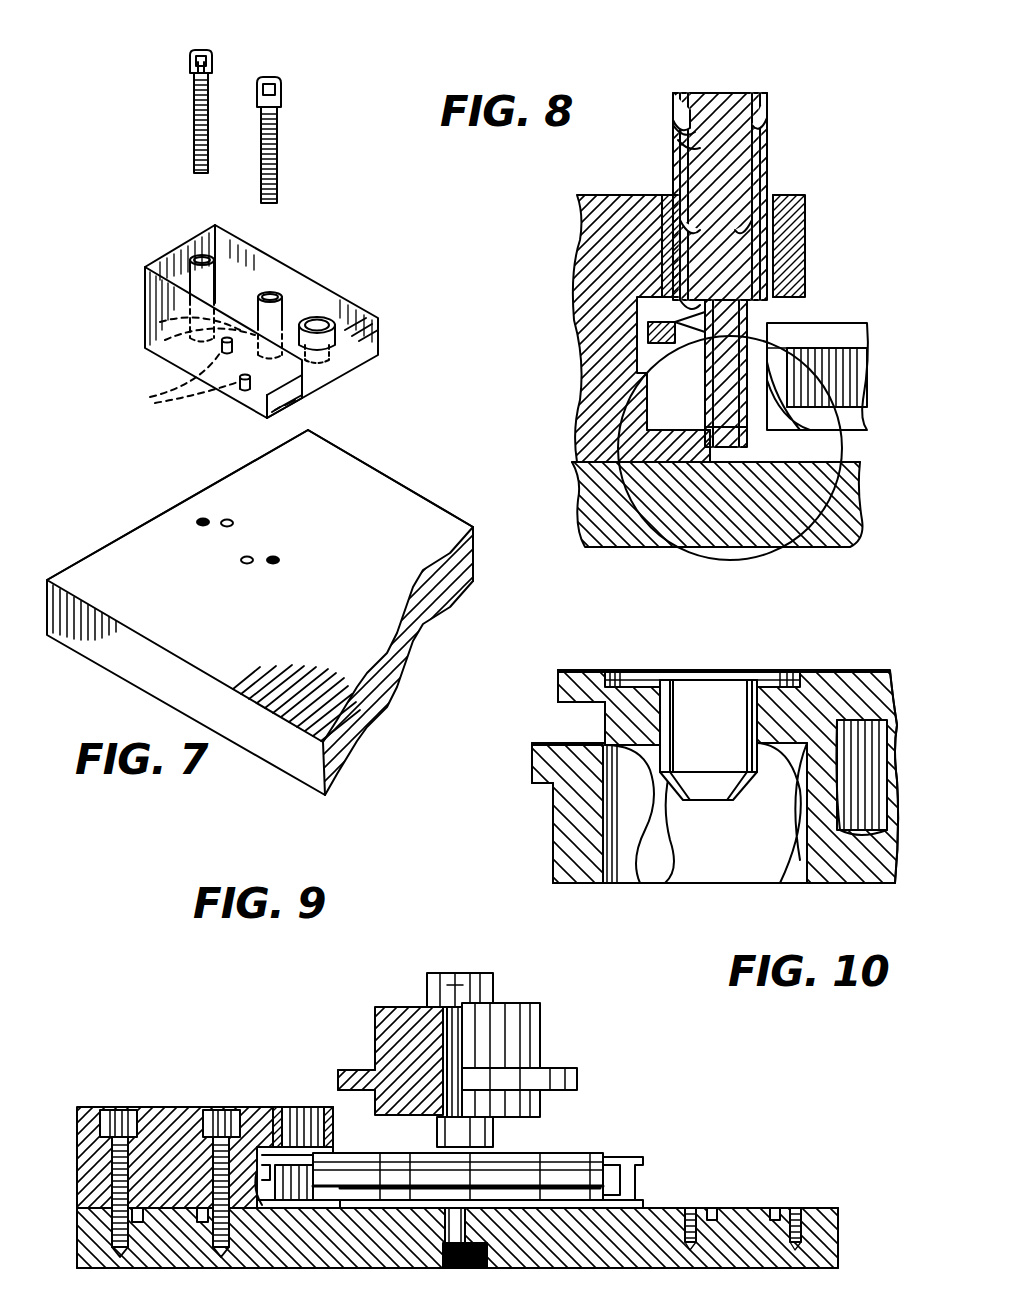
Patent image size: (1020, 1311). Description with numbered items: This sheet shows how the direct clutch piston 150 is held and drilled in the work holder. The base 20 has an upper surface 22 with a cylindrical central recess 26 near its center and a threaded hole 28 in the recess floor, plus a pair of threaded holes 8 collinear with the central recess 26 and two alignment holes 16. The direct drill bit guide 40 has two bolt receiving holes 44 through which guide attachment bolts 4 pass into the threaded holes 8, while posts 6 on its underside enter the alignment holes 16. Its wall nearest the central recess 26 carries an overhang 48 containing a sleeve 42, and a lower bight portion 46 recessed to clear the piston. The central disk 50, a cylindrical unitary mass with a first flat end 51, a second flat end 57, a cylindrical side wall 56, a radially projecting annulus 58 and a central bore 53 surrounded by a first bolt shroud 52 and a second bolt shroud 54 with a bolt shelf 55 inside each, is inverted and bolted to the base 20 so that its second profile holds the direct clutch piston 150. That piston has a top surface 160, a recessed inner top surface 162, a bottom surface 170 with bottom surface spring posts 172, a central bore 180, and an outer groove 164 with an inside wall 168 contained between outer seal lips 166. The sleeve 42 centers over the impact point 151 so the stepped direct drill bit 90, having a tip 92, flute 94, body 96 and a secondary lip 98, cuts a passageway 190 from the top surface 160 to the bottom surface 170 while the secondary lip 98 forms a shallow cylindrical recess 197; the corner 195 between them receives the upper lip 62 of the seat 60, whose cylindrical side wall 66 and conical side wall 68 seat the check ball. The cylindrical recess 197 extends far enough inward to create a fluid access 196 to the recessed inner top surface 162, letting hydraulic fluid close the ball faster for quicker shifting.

In FIG. 7, the drill bit guide attachment bolt 4 is at (213, 60).
In FIG. 9, the drill bit guide attachment bolt 4 is at (118, 1108).
In FIG. 7, the post 6 is at (188, 375).
In FIG. 9, the post 6 is at (140, 1216).
In FIG. 7, the threaded hole 8 is at (272, 565).
In FIG. 9, the threaded hole 8 is at (690, 1207).
In FIG. 7, the alignment hole 16 is at (247, 556).
In FIG. 9, the alignment hole 16 is at (776, 1207).
In FIG. 7, the base 20 is at (416, 470).
In FIG. 8, the base 20 is at (717, 504).
In FIG. 9, the base 20 is at (856, 1203).
In FIG. 7, the upper surface 22 is at (435, 532).
In FIG. 9, the upper surface 22 is at (657, 1207).
In FIG. 9, the central recess 26 is at (395, 1270).
In FIG. 9, the threaded hole 28 is at (460, 1270).
In FIG. 7, the direct drill bit guide 40 is at (118, 298).
In FIG. 8, the direct drill bit guide 40 is at (607, 190).
In FIG. 9, the direct drill bit guide 40 is at (176, 1106).
In FIG. 7, the sleeve 42 is at (328, 318).
In FIG. 8, the sleeve 42 is at (776, 193).
In FIG. 7, the bolt receiving hole 44 is at (160, 325).
In FIG. 7, the bight portion 46 is at (297, 405).
In FIG. 8, the bight portion 46 is at (625, 405).
In FIG. 7, the overhang 48 is at (380, 333).
In FIG. 8, the overhang 48 is at (800, 196).
In FIG. 9, the central disk 50 is at (300, 970).
In FIG. 9, the first flat end 51 is at (527, 1005).
In FIG. 9, the first bolt shroud 52 is at (455, 1003).
In FIG. 9, the central bore 53 is at (447, 1012).
In FIG. 9, the second bolt shroud 54 is at (437, 1132).
In FIG. 9, the bolt shelf 55 is at (456, 972).
In FIG. 9, the cylindrical side wall 56 is at (376, 1040).
In FIG. 9, the second flat end 57 is at (542, 1120).
In FIG. 9, the annulus 58 is at (339, 1075).
In FIG. 10, the seat 60 is at (710, 740).
In FIG. 10, the upper lip 62 is at (770, 680).
In FIG. 10, the cylindrical side wall 66 is at (626, 872).
In FIG. 10, the conical side wall 68 is at (662, 872).
In FIG. 8, the direct drill bit 90 is at (750, 92).
In FIG. 8, the tip 92 is at (665, 535).
In FIG. 8, the flute 94 is at (676, 124).
In FIG. 8, the body 96 is at (680, 146).
In FIG. 8, the secondary lip 98 is at (647, 331).
In FIG. 8, the direct clutch piston 150 is at (818, 300).
In FIG. 10, the direct clutch piston 150 is at (528, 860).
In FIG. 9, the direct clutch piston 150 is at (315, 1210).
In FIG. 9, the impact point 151 is at (276, 1108).
In FIG. 10, the top surface 160 is at (580, 668).
In FIG. 9, the top surface 160 is at (627, 1158).
In FIG. 8, the recessed inner top surface 162 is at (822, 345).
In FIG. 10, the recessed inner top surface 162 is at (897, 725).
In FIG. 10, the outer groove 164 is at (590, 742).
In FIG. 10, the outer seal lips 166 is at (558, 688).
In FIG. 10, the inside wall 168 is at (600, 722).
In FIG. 10, the bottom surface 170 is at (870, 870).
In FIG. 8, the bottom surface spring posts 172 is at (778, 545).
In FIG. 9, the bottom surface spring posts 172 is at (584, 1212).
In FIG. 9, the central bore 180 is at (540, 1125).
In FIG. 10, the passageway 190 is at (782, 860).
In FIG. 10, the corner 195 is at (605, 790).
In FIG. 10, the fluid access 196 is at (832, 670).
In FIG. 10, the cylindrical recess 197 is at (620, 670).